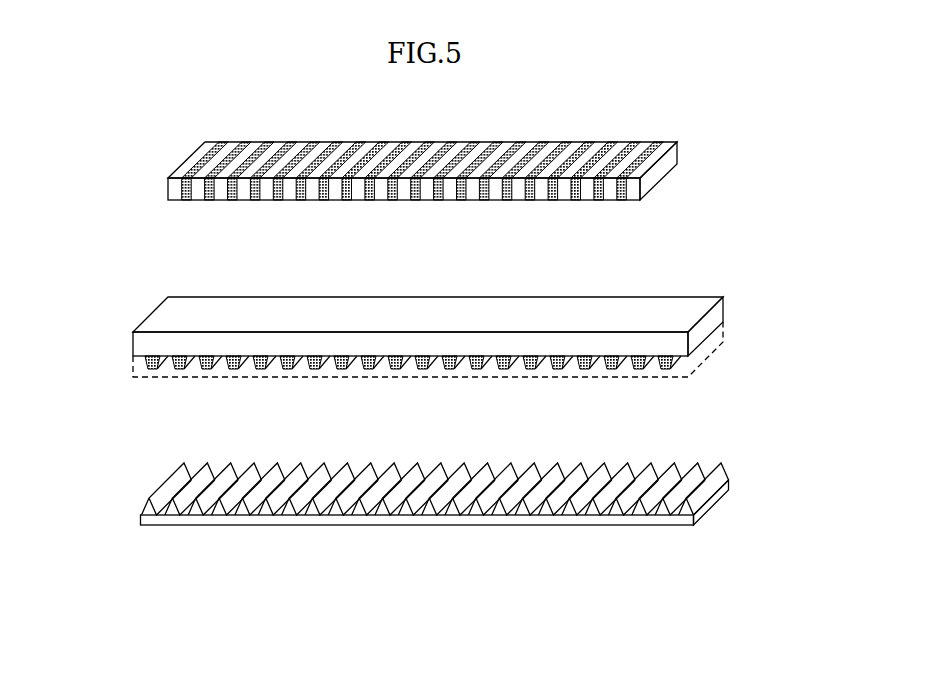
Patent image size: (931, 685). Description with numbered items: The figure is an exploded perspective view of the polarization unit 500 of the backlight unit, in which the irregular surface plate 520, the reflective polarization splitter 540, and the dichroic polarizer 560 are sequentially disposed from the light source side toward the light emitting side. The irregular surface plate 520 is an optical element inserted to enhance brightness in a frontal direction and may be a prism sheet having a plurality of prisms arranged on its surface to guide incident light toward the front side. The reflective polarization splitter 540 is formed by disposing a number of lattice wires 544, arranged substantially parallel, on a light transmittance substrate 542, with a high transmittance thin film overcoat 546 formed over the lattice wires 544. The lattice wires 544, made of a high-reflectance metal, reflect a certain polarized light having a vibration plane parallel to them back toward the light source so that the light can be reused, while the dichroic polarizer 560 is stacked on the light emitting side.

The polarization unit 500 is at (421, 658).
The irregular surface plate 520 is at (727, 488).
The reflective polarization splitter 540 is at (428, 342).
The light transmittance substrate 542 is at (707, 302).
The lattice wires 544 is at (673, 372).
The high transmittance thin film overcoat 546 is at (160, 378).
The dichroic polarizer 560 is at (647, 141).